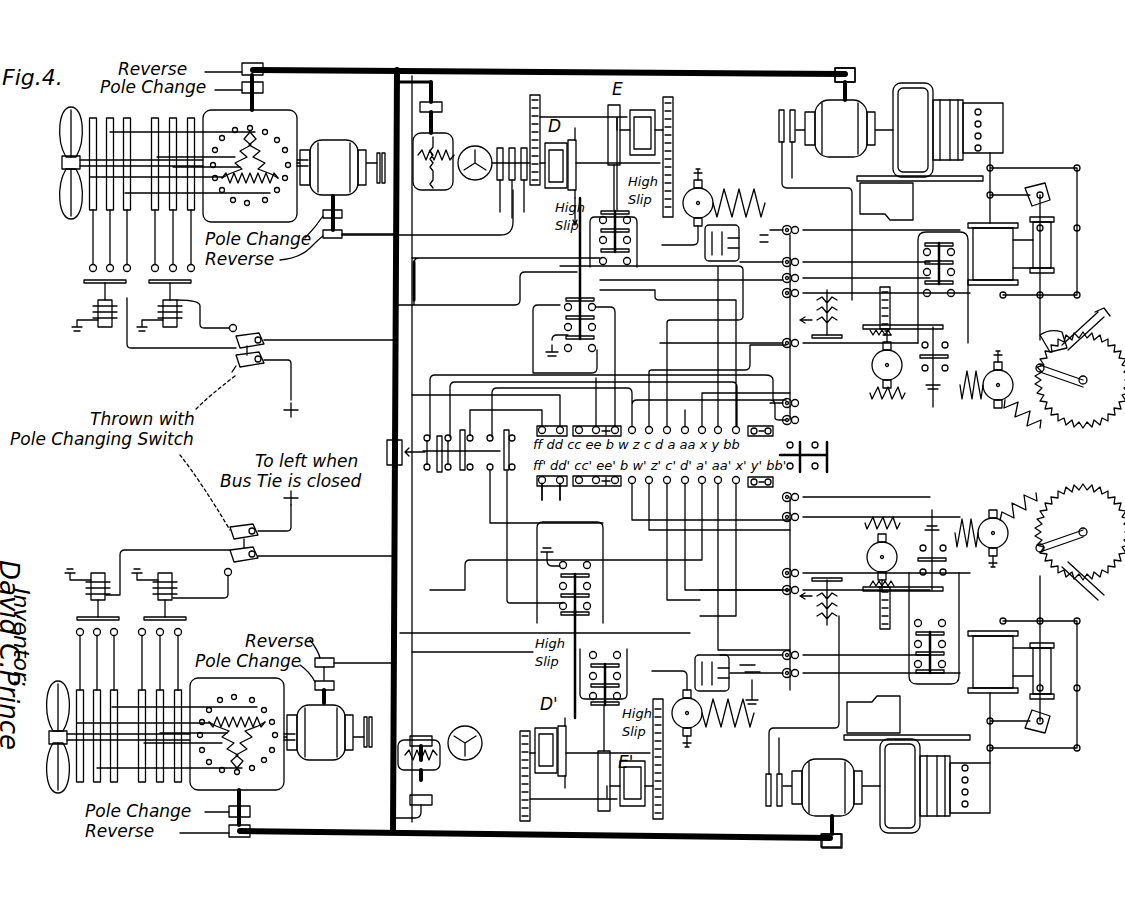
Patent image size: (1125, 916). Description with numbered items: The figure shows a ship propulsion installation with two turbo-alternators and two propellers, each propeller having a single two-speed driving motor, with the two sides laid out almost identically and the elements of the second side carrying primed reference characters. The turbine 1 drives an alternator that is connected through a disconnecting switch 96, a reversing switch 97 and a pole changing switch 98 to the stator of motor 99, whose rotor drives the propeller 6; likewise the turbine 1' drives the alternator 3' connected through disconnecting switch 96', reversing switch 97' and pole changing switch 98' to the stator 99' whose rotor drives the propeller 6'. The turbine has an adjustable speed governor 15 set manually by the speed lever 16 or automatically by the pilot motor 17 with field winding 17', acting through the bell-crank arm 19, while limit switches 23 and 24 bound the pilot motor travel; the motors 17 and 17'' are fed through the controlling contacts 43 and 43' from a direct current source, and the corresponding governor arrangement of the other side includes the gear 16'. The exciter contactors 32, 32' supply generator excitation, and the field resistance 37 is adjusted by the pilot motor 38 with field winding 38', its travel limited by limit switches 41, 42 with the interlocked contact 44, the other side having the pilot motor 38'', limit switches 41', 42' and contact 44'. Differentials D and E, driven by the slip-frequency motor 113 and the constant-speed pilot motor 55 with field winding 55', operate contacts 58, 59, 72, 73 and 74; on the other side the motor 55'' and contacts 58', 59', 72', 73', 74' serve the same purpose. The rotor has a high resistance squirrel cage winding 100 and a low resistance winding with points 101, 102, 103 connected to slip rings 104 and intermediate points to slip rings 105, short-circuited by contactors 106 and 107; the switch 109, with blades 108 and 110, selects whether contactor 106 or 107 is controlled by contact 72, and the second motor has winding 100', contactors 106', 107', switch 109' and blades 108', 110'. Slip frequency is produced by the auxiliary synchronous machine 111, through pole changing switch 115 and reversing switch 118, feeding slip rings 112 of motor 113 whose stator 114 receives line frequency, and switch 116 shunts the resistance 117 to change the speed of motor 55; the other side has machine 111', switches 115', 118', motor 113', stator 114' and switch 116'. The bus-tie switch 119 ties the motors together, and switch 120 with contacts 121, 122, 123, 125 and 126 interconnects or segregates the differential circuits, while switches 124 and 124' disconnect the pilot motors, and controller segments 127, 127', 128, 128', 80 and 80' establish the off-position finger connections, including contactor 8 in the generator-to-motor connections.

The elastic fluid turbine 1 is at (940, 83).
The turbine 1' is at (917, 835).
The alternator 3' is at (878, 732).
The propeller 6 is at (55, 163).
The propeller 6' is at (58, 750).
The circuit controlling and reversing contactor 8 is at (850, 118).
The adjustable speed governor 15 is at (1037, 183).
The speed lever 16 is at (1080, 349).
The gear 16' is at (1080, 564).
The pilot motor 17 is at (1020, 422).
The field winding 17' is at (969, 400).
The pilot motor 17'' is at (993, 505).
The bell-crank lever arm 19 is at (1065, 385).
The limit switch 23 is at (1090, 340).
The limit switch 24 is at (1040, 340).
The contactor 32 is at (823, 307).
The contactor 32' is at (821, 611).
The resistance 37 is at (885, 300).
The pilot motor 38 is at (873, 359).
The field winding 38' is at (888, 400).
The pilot motor 38'' is at (871, 554).
The limit switch 41 is at (902, 275).
The limit switch 41' is at (912, 629).
The limit switch 42 is at (1001, 377).
The limit switch 42' is at (988, 541).
The contact 43 is at (924, 287).
The contact 43' is at (913, 628).
The contact 44 is at (934, 370).
The contact 44' is at (932, 541).
The pilot motor 55 is at (696, 203).
The field winding 55' is at (740, 189).
The motor 55'' is at (703, 711).
The contact 58 is at (547, 335).
The contact 58' is at (557, 572).
The contact 59 is at (533, 344).
The contact 59' is at (558, 548).
The contact 72 is at (613, 226).
The contact 72' is at (603, 689).
The contact 73 is at (648, 227).
The contact 73' is at (635, 687).
The contact 74 is at (648, 247).
The contact 74' is at (616, 632).
The contact segment 80 is at (757, 420).
The contact segment 80' is at (757, 494).
The disconnecting switch 96 is at (827, 83).
The disconnecting switch 96' is at (810, 832).
The reversing switch 97 is at (266, 86).
The reversing switch 97' is at (257, 824).
The pole changing switch 98 is at (265, 92).
The pole changing switch 98' is at (257, 807).
The motor stator 99 is at (204, 166).
The stator 99' is at (196, 738).
The high resistance squirrel cage winding 100 is at (269, 207).
The squirrel cage winding 100' is at (181, 706).
The winding point 101 is at (225, 193).
The winding point 102 is at (248, 130).
The winding point 103 is at (275, 182).
The slip rings 104 is at (116, 120).
The slip rings 105 is at (178, 120).
The contactor 106 is at (146, 314).
The contactor 106' is at (142, 585).
The contactor 107 is at (189, 305).
The contactor 107' is at (182, 595).
The switch blade 108 is at (316, 331).
The switch blade 108' is at (275, 573).
The switch 109 is at (244, 381).
The switch 109' is at (234, 524).
The switch blade 110 is at (234, 382).
The switch blade 110' is at (313, 549).
The auxiliary synchronous machine 111 is at (341, 146).
The auxiliary synchronous machine 111' is at (328, 749).
The slip rings 112 is at (516, 148).
The induction motor 113 is at (427, 190).
The induction motor 113' is at (463, 728).
The stator 114 is at (425, 147).
The stator 114' is at (418, 777).
The pole changing switch 115 is at (351, 213).
The pole changing switch 115' is at (344, 689).
The switch 116 is at (712, 253).
The switch 116' is at (694, 661).
The adjustable resistance 117 is at (745, 245).
The reversing switch 118 is at (359, 246).
The reversing switch 118' is at (355, 659).
The bus-tie switch 119 is at (387, 450).
The switch 120 is at (425, 470).
The contact 121 is at (448, 470).
The contact 122 is at (463, 430).
The contact 123 is at (506, 430).
The pilot motor disconnecting switch 124 is at (812, 330).
The pilot motor disconnecting switch 124' is at (809, 592).
The contact 125 is at (820, 445).
The contact 126 is at (828, 465).
The contact segment 127 is at (597, 413).
The contact segment 127' is at (597, 510).
The contact segment 128 is at (541, 413).
The contact segment 128' is at (539, 510).